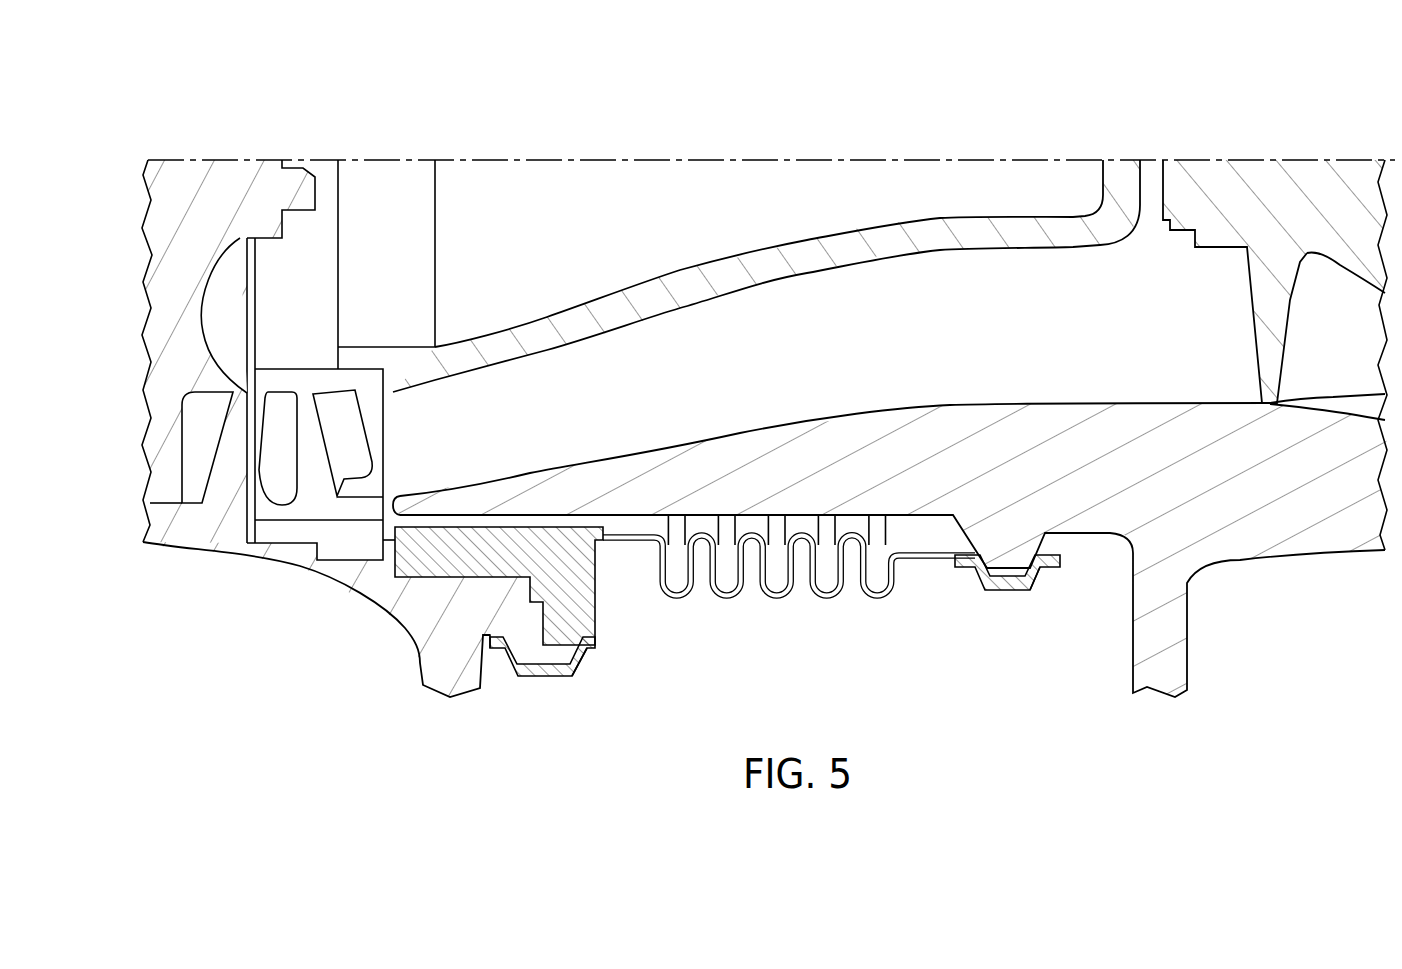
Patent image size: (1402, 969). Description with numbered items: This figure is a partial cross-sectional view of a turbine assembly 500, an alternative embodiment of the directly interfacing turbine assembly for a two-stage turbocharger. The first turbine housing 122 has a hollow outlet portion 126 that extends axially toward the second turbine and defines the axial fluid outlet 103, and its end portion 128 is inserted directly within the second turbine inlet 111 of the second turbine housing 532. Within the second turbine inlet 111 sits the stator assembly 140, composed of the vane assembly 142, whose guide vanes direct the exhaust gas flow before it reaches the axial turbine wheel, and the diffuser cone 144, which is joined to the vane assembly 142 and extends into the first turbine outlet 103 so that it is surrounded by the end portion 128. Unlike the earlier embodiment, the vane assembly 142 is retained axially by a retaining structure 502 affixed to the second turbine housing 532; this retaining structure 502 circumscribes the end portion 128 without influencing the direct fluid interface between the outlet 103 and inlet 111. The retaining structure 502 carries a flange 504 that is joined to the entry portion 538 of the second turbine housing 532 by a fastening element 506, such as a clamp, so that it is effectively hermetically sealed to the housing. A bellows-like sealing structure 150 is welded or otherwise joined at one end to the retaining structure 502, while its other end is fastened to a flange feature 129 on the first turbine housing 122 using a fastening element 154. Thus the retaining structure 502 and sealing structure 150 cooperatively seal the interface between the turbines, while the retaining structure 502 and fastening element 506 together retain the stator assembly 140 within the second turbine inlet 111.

The turbine assembly 500 is at (768, 288).
The stator assembly 140 is at (288, 360).
The diffuser cone 144 is at (766, 276).
The axial fluid outlet 103 is at (769, 263).
The second turbine inlet 111 is at (790, 250).
The outlet portion 126 is at (890, 503).
The end portion 128 is at (437, 461).
The vane assembly 142 is at (240, 537).
The second turbine housing 532 is at (336, 632).
The entry portion 538 is at (495, 676).
The fastening element 506 is at (568, 686).
The flange 504 is at (607, 690).
The retaining structure 502 is at (553, 605).
The sealing structure 150 is at (863, 598).
The fastening element 154 is at (1015, 601).
The feature 129 is at (1052, 601).
The first turbine housing 122 is at (1112, 535).